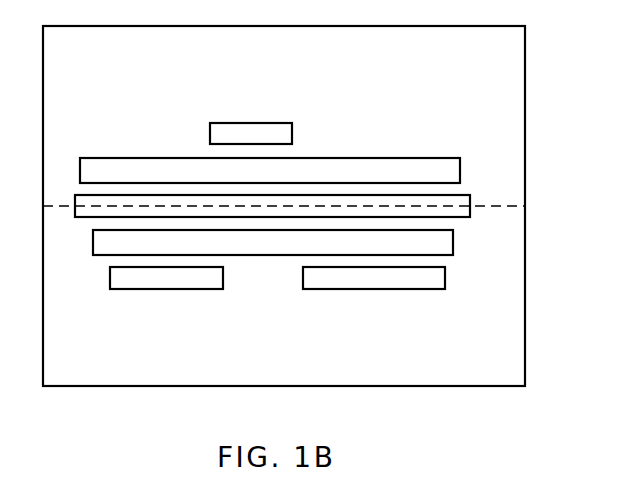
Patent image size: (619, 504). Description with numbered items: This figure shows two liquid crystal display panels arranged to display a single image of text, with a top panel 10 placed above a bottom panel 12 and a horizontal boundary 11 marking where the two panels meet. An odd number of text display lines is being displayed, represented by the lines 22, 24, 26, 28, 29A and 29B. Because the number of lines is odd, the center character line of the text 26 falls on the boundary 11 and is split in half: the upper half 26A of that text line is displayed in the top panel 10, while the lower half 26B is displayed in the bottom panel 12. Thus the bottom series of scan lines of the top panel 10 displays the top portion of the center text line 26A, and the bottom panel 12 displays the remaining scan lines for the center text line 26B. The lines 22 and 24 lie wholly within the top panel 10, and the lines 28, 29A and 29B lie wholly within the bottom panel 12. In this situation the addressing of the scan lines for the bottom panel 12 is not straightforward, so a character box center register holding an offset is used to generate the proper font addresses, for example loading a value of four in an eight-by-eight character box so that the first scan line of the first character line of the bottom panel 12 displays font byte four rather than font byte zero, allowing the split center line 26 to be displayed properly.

The top panel 10 is at (525, 80).
The center line of the device 11 is at (506, 205).
The bottom panel 12 is at (525, 328).
The text display line 22 is at (291, 122).
The text display line 24 is at (461, 167).
The center character line of the text 26 is at (471, 212).
The half of the text line 26A is at (472, 200).
The half of the text line 26B is at (455, 217).
The text display line 28 is at (454, 250).
The text display line 29A is at (213, 290).
The text display line 29B is at (416, 290).